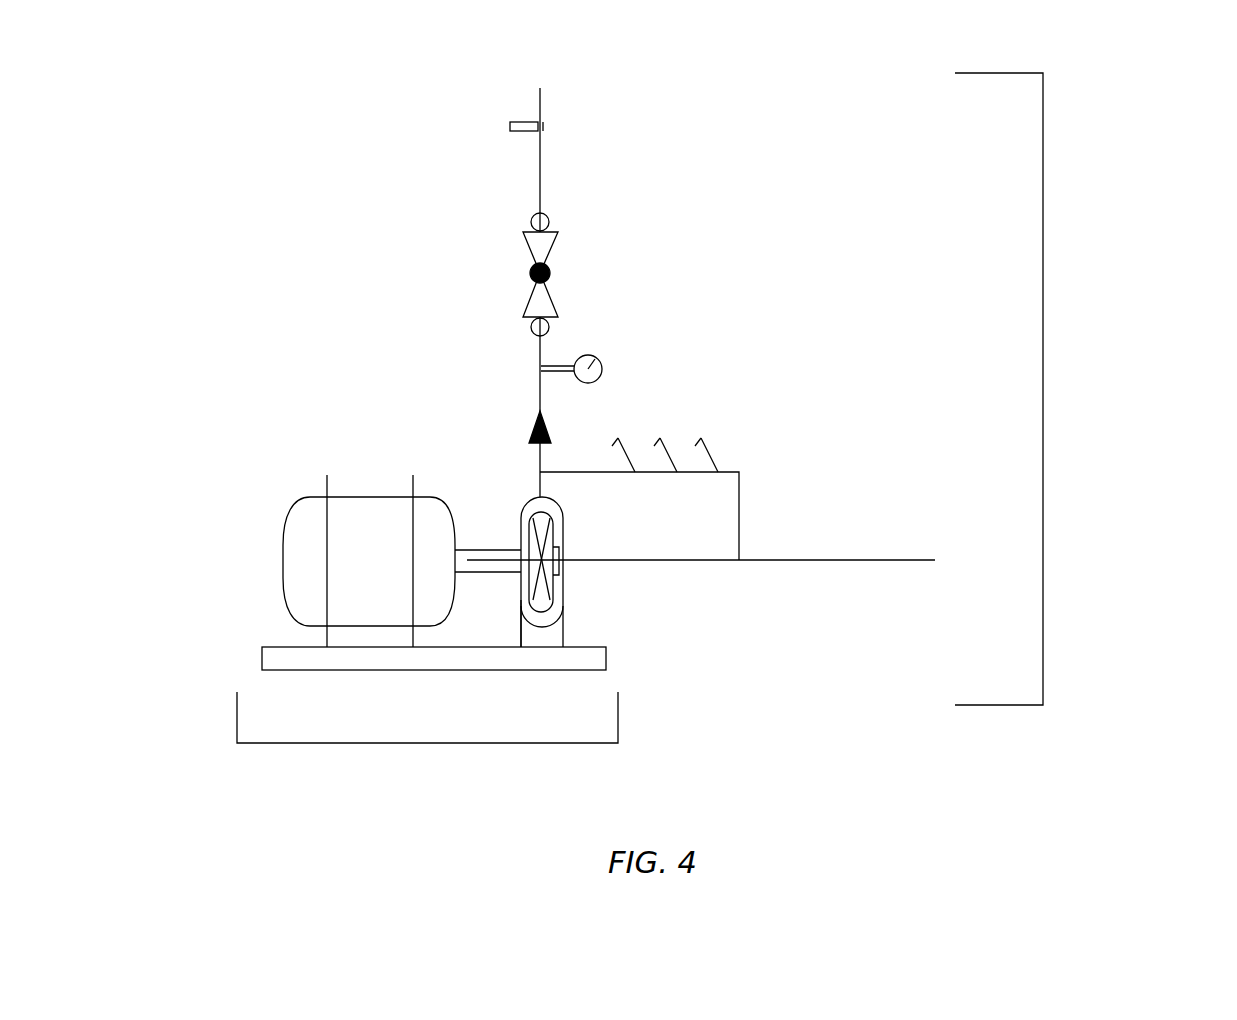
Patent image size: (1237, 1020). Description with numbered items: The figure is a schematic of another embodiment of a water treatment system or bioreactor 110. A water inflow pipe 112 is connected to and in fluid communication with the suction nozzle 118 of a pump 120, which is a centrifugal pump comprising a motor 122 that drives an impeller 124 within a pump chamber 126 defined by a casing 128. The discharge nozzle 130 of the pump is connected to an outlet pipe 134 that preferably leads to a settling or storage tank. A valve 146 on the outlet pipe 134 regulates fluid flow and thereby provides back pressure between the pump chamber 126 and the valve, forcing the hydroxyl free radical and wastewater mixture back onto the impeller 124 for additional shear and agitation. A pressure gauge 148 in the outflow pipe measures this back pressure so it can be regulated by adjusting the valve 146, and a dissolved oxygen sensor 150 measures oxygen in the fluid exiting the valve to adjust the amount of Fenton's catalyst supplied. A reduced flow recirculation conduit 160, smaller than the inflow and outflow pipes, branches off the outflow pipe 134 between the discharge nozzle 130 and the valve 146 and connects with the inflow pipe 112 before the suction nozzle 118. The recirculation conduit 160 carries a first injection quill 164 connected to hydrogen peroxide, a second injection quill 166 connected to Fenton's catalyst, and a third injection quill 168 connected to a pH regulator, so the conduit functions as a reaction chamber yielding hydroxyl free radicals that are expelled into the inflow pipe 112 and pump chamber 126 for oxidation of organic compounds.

The bioreactor 110 is at (1043, 348).
The inflow pipe 112 is at (845, 560).
The suction nozzle 118 is at (563, 560).
The pump 120 is at (422, 743).
The motor 122 is at (402, 561).
The impeller 124 is at (523, 513).
The pump chamber 126 is at (558, 592).
The casing 128 is at (522, 593).
The discharge nozzle 130 is at (541, 495).
The outlet pipe 134 is at (540, 353).
The valve 146 is at (568, 274).
The pressure gauge 148 is at (604, 369).
The dissolved oxygen sensor 150 is at (517, 130).
The recirculation conduit 160 is at (739, 520).
The first injection quill 164 is at (618, 438).
The second injection quill 166 is at (660, 438).
The third injection quill 168 is at (701, 438).